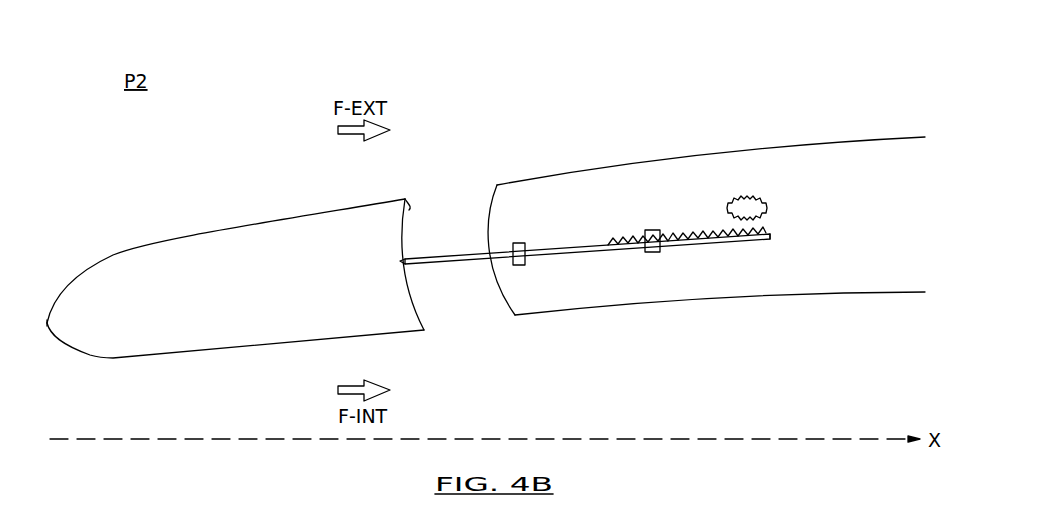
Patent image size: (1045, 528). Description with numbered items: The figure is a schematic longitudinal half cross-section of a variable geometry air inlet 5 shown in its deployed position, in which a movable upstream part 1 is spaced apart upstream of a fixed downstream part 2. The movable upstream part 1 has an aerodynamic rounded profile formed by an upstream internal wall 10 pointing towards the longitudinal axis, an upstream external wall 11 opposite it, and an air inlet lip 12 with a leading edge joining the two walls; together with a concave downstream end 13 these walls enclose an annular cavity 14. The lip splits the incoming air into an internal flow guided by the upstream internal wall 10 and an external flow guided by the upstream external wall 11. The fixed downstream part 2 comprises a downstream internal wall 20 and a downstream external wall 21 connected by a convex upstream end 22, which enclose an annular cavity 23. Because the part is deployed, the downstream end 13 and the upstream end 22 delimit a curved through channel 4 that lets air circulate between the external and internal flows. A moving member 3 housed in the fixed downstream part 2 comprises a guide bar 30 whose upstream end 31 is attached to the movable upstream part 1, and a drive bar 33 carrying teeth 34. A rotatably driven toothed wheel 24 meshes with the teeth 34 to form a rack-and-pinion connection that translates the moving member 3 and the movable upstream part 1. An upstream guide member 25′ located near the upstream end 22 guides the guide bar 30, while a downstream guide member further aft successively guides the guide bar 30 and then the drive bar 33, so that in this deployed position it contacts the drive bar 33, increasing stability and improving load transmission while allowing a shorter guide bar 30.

The movable upstream part 1 is at (227, 279).
The fixed downstream part 2 is at (700, 204).
The moving member 3 is at (602, 232).
The through channel 4 is at (470, 312).
The air inlet 5 is at (598, 115).
The upstream internal wall 10 is at (222, 352).
The upstream external wall 11 is at (217, 236).
The air inlet lip 12 is at (47, 325).
The downstream end 13 is at (406, 200).
The annular cavity 14 is at (283, 285).
The downstream internal wall 20 is at (804, 292).
The downstream external wall 21 is at (800, 146).
The upstream end 22 is at (497, 188).
The annular cavity 23 is at (852, 212).
The toothed wheel 24 is at (747, 194).
The upstream guide member 25′ is at (520, 243).
The guide bar 30 is at (563, 262).
The upstream end 31 is at (406, 264).
The drive bar 33 is at (727, 245).
The teeth 34 is at (773, 228).